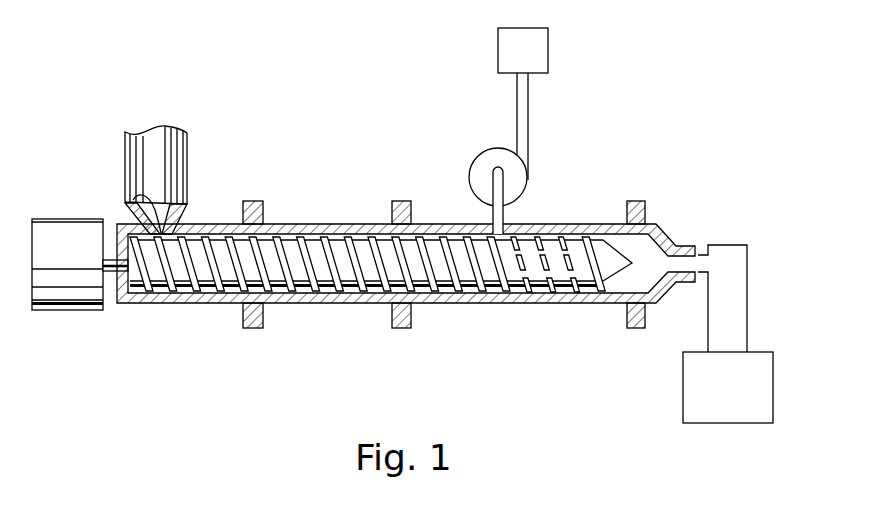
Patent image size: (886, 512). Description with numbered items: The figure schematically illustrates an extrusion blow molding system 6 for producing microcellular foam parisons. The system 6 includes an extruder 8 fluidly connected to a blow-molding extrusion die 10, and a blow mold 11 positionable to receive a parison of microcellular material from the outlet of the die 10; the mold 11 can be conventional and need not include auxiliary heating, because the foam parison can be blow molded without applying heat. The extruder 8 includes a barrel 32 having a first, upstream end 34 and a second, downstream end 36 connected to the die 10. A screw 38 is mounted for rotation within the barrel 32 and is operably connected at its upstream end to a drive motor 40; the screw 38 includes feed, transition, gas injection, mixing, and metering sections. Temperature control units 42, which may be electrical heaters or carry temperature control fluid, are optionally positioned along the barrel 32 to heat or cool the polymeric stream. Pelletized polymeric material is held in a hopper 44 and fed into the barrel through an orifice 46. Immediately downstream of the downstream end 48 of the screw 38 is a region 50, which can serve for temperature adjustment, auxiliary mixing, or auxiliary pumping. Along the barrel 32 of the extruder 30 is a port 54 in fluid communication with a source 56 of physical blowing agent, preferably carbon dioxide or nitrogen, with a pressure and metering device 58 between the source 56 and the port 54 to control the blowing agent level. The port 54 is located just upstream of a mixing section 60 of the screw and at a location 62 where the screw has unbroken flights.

The extrusion blow molding system 6 is at (152, 46).
The extruder 8 is at (428, 350).
The blow-molding extrusion die 10 is at (738, 290).
The blow mold 11 is at (692, 378).
The extruder 30 is at (254, 117).
The barrel 32 is at (185, 305).
The first, upstream end 34 is at (119, 305).
The second, downstream end 36 is at (661, 243).
The screw 38 is at (381, 260).
The drive motor 40 is at (58, 232).
The temperature control units 42 is at (250, 201).
The hopper 44 is at (148, 148).
The orifice 46 is at (130, 203).
The downstream end 48 is at (607, 255).
The region 50 is at (640, 260).
The port 54 is at (500, 233).
The source 56 is at (548, 42).
The pressure and metering device 58 is at (493, 157).
The mixing section 60 is at (518, 307).
The location 62 is at (472, 228).